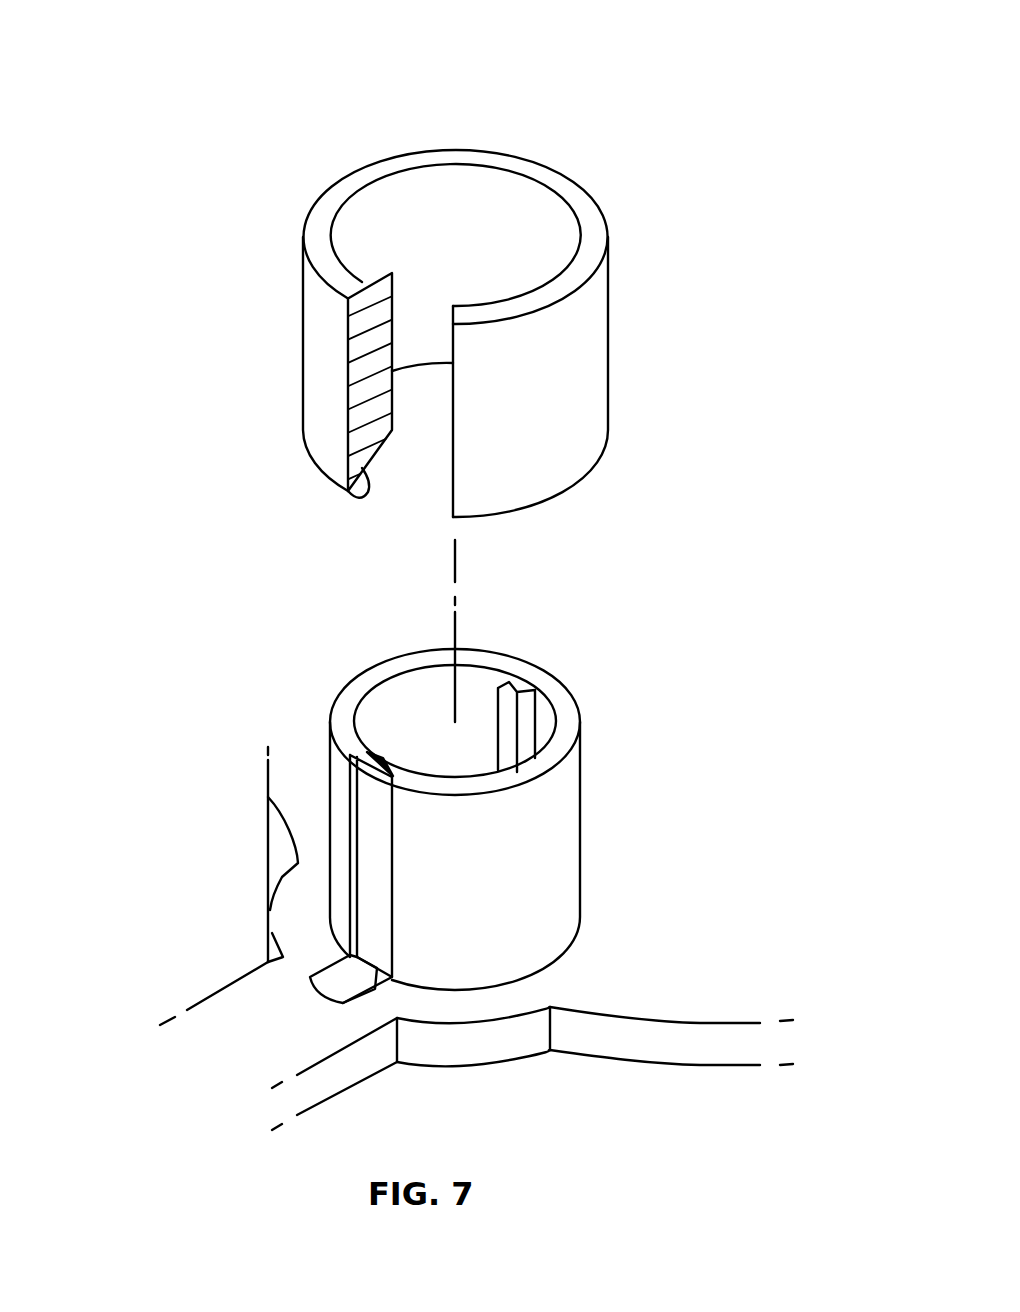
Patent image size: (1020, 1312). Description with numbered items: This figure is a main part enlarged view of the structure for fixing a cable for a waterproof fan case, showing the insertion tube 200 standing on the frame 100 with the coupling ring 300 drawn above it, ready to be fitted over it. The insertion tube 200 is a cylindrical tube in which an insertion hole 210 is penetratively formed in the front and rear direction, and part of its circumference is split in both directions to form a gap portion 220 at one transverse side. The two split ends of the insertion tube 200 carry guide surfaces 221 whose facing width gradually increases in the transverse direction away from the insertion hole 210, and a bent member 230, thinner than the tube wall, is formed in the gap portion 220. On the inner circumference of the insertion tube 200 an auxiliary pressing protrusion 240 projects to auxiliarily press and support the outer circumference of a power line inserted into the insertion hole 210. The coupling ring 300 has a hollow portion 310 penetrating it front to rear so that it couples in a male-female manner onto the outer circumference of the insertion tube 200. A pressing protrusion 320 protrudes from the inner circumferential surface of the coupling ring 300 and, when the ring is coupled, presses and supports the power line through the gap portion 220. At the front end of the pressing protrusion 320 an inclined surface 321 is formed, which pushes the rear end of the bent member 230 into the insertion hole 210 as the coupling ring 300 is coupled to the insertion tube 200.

The frame 100 is at (298, 920).
The insertion tube 200 is at (360, 693).
The insertion hole 210 is at (435, 716).
The gap portion 220 is at (355, 717).
The guide surfaces 221 is at (365, 764).
The bent member 230 is at (372, 788).
The auxiliary pressing protrusion 240 is at (512, 686).
The coupling ring 300 is at (348, 182).
The hollow portion 310 is at (466, 227).
The pressing protrusion 320 is at (323, 243).
The inclined surface 321 is at (362, 468).